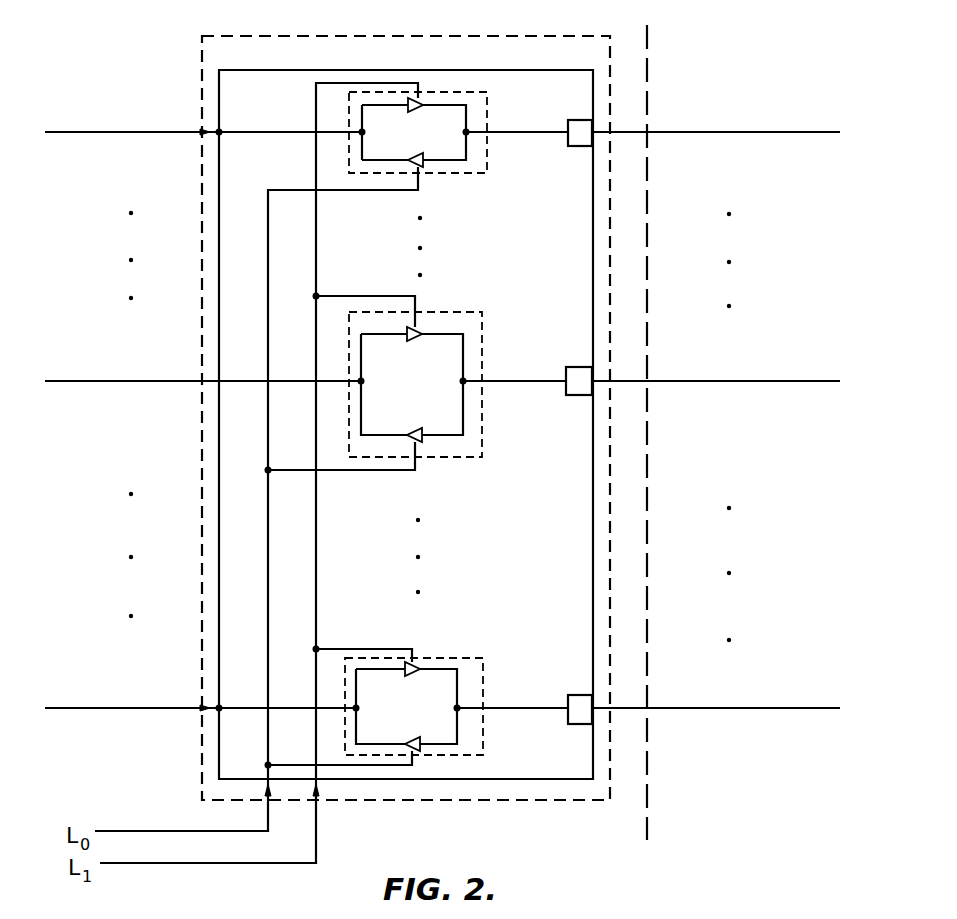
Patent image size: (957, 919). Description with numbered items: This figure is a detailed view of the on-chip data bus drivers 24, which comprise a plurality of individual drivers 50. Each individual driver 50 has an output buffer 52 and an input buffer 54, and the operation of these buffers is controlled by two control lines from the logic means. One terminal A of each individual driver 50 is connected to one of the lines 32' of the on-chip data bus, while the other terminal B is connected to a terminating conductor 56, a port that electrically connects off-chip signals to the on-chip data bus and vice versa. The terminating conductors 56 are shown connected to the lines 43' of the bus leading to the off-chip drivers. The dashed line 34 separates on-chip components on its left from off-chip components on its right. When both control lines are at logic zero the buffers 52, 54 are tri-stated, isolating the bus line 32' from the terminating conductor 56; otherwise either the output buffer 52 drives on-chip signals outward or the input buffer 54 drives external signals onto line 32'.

The data bus drivers 24 is at (592, 37).
The dashed line 34 is at (648, 40).
The lines of the on-chip data bus 32' is at (203, 406).
The lines of the bus 43' is at (648, 407).
The individual driver 50 is at (487, 93).
The output buffer 52 is at (415, 112).
The input buffer 54 is at (417, 152).
The terminating conductor 56 is at (582, 120).